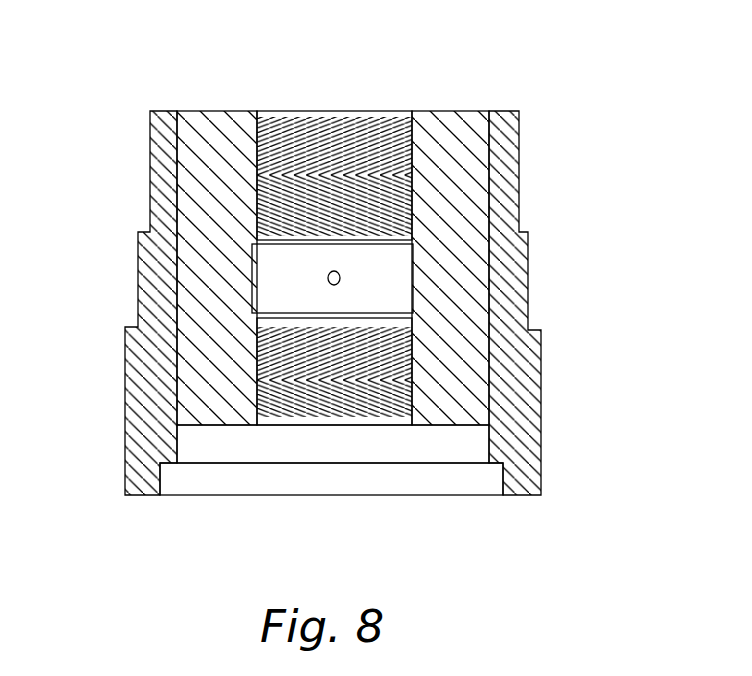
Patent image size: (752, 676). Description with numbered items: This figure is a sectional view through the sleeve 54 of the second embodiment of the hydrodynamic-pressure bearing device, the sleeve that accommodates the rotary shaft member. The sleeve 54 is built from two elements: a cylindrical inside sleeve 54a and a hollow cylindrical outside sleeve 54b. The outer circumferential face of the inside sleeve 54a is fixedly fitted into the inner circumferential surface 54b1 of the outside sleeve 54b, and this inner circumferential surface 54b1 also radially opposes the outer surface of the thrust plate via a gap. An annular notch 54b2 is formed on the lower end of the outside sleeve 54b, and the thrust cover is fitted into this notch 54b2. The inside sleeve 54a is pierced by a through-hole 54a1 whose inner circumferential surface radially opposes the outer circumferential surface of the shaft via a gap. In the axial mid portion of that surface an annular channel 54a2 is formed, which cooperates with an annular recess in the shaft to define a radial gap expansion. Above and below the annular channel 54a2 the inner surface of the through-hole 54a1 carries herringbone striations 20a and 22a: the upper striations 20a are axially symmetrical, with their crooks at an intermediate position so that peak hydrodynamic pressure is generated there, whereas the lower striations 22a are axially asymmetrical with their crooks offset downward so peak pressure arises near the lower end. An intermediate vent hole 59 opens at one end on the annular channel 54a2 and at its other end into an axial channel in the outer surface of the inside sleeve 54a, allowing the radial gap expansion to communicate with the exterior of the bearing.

The sleeve 54 is at (507, 114).
The inside sleeve 54a is at (420, 172).
The through-hole 54a1 is at (297, 135).
The annular channel 54a2 is at (254, 272).
The outside sleeve 54b is at (525, 357).
The inner circumferential surface 54b1 is at (177, 443).
The annular notch 54b2 is at (162, 484).
The herringbone striations 20a is at (395, 122).
The herringbone striations 22a is at (325, 405).
The intermediate vent hole 59 is at (340, 276).